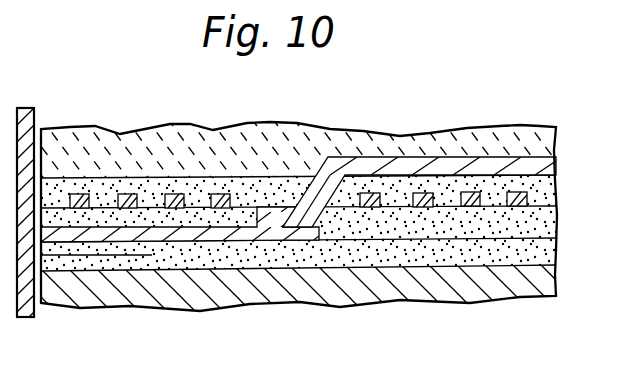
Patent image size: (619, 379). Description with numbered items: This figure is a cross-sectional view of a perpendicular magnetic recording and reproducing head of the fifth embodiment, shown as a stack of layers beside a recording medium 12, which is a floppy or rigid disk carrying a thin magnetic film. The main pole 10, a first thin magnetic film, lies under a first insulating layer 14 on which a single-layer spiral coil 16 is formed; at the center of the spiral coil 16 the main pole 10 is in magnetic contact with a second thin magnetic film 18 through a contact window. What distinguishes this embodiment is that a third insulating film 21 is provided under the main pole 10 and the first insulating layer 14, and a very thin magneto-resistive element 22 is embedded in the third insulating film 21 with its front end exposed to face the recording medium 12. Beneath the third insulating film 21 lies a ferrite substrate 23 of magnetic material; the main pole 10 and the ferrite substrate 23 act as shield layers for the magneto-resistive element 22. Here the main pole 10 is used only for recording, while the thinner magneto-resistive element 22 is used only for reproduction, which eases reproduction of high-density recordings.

The main pole 10 is at (227, 242).
The recording medium 12 is at (25, 317).
The first insulating layer 14 is at (557, 215).
The spiral coil 16 is at (517, 191).
The second thin magnetic film 18 is at (556, 162).
The third insulating film 21 is at (375, 252).
The magneto-resistive element 22 is at (105, 255).
The ferrite substrate 23 is at (443, 298).